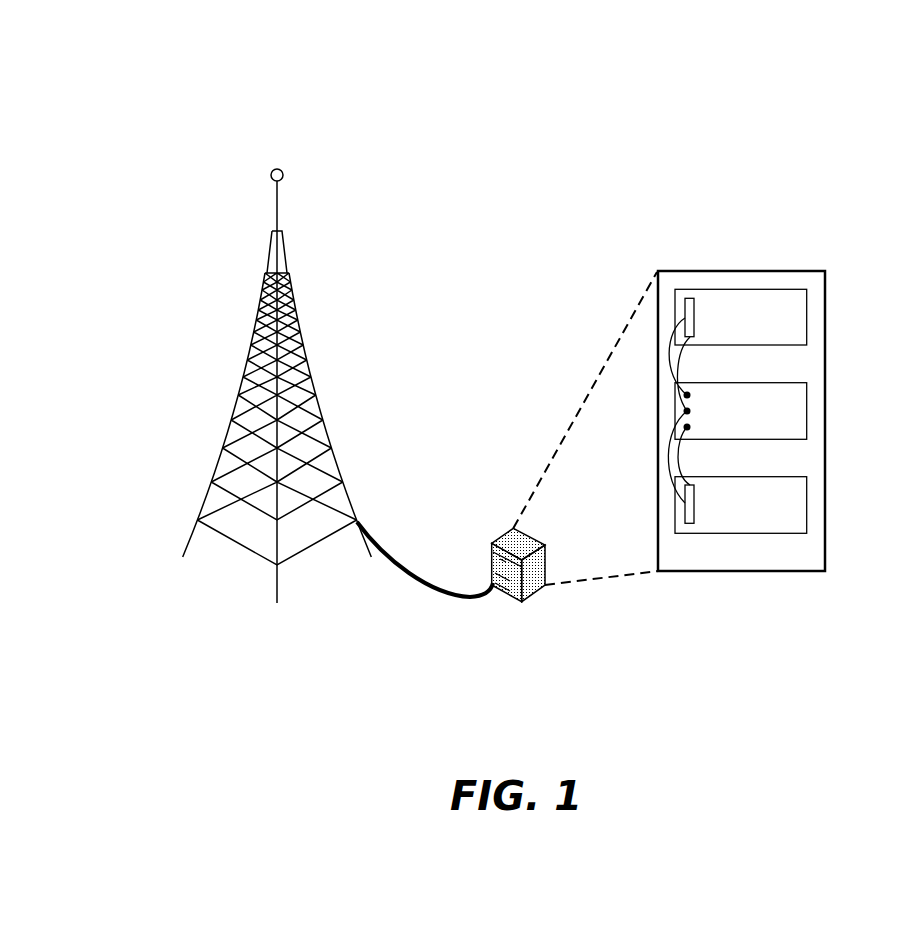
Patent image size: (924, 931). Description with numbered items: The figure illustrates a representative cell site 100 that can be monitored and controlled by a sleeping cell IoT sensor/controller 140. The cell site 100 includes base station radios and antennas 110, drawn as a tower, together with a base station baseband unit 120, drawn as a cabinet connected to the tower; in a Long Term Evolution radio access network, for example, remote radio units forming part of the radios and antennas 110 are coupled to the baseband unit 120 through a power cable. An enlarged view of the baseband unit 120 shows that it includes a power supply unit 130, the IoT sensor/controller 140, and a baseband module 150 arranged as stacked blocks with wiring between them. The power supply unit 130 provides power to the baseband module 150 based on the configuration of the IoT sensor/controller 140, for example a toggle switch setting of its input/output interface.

The cell site 100 is at (145, 128).
The base station radios and antennas 110 is at (278, 219).
The base station baseband unit 120 is at (525, 603).
The power supply unit 130 is at (807, 322).
The IoT sensor/controller 140 is at (807, 413).
The baseband module 150 is at (807, 505).